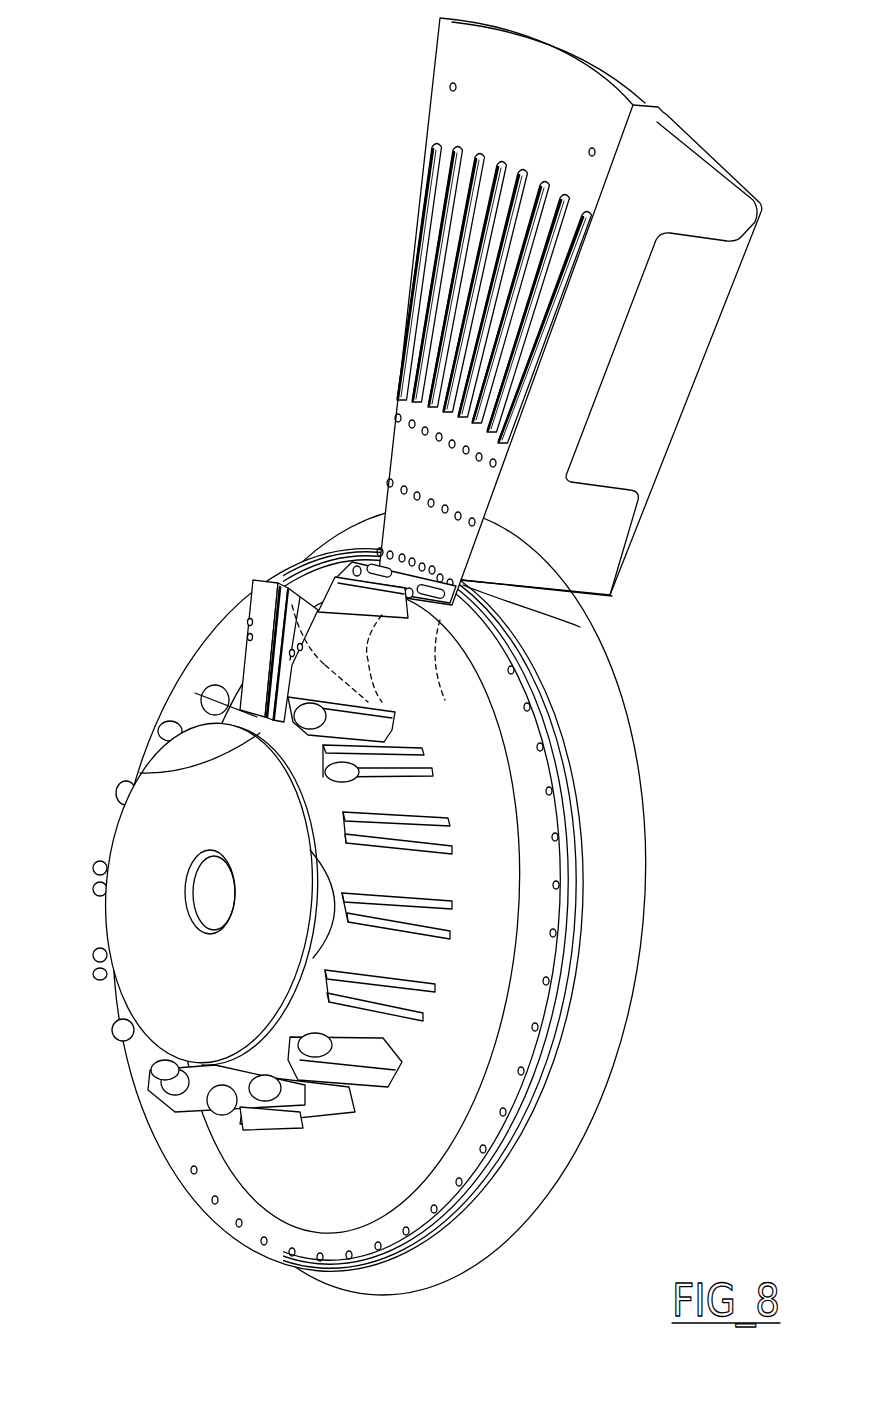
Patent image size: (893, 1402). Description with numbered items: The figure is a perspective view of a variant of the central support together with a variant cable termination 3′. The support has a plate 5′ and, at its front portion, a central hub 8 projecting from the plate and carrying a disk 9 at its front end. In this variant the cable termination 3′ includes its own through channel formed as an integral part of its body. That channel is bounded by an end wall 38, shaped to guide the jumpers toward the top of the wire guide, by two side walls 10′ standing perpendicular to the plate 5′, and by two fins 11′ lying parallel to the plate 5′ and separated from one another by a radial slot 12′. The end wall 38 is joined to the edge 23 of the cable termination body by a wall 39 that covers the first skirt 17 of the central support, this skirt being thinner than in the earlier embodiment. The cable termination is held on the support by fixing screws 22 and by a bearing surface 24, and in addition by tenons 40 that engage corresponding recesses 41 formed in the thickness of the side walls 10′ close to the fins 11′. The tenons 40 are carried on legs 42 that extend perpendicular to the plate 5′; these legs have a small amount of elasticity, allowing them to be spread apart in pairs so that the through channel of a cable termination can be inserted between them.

The cable termination 3′ is at (686, 752).
The plate 5′ is at (497, 817).
The central hub 8 is at (210, 898).
The disk 9 is at (194, 893).
The side wall 10′ is at (277, 583).
The fin 11′ is at (258, 603).
The radial slot 12′ is at (263, 667).
The first skirt 17 is at (533, 878).
The fixing screw 22 is at (372, 567).
The edge 23 is at (487, 628).
The bearing surface 24 is at (509, 591).
The end wall 38 is at (308, 593).
The wall 39 is at (397, 583).
The tenon 40 is at (220, 1105).
The recess 41 is at (175, 768).
The leg 42 is at (270, 1122).